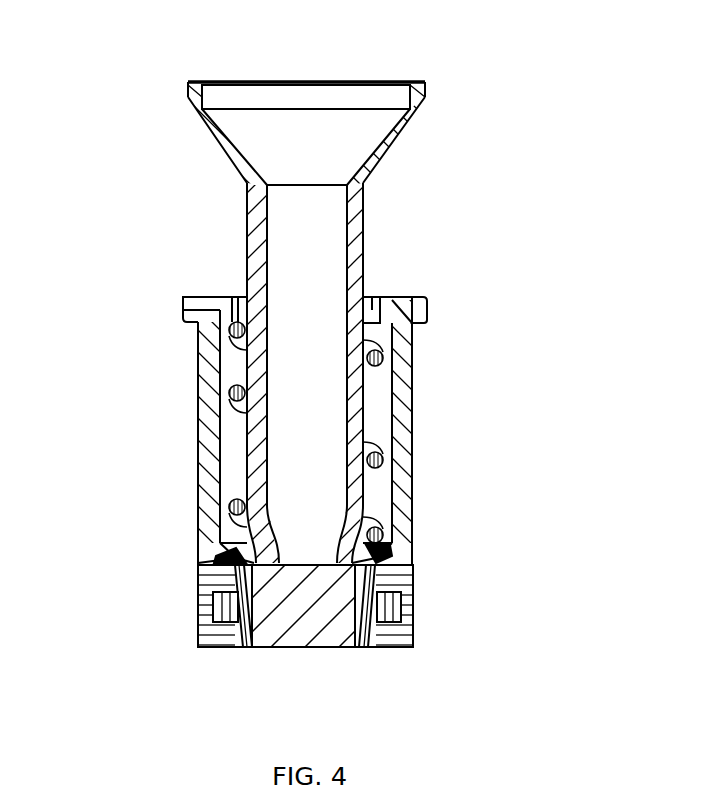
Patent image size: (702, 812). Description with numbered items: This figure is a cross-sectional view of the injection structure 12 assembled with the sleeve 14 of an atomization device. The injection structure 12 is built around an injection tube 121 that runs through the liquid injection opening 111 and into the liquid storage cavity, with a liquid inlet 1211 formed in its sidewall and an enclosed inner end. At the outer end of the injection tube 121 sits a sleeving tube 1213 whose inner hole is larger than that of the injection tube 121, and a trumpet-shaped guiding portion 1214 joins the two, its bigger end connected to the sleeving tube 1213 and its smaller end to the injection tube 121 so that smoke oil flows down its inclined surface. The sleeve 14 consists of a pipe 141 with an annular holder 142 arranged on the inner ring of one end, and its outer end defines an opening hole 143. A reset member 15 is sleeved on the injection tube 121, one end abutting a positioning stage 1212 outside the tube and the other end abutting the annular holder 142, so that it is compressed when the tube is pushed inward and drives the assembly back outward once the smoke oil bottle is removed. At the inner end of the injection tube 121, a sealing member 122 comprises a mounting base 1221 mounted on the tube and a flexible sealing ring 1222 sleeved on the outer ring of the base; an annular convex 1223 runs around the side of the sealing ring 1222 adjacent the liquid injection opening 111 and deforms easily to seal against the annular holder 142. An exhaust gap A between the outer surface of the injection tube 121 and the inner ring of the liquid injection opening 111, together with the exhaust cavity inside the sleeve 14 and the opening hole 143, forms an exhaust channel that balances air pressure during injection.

The injection structure 12 is at (414, 70).
The injection tube 121 is at (360, 261).
The liquid inlet 1211 is at (358, 524).
The positioning stage 1212 is at (379, 307).
The sleeving tube 1213 is at (415, 98).
The guiding portion 1214 is at (398, 160).
The sleeve 14 is at (196, 391).
The pipe 141 is at (207, 440).
The annular holder 142 is at (233, 552).
The opening hole 143 is at (203, 305).
The reset member 15 is at (384, 357).
The liquid injection opening 111 is at (388, 530).
The exhaust gap A is at (388, 556).
The sealing member 122 is at (399, 654).
The mounting base 1221 is at (362, 640).
The sealing ring 1222 is at (404, 632).
The annular convex 1223 is at (203, 568).